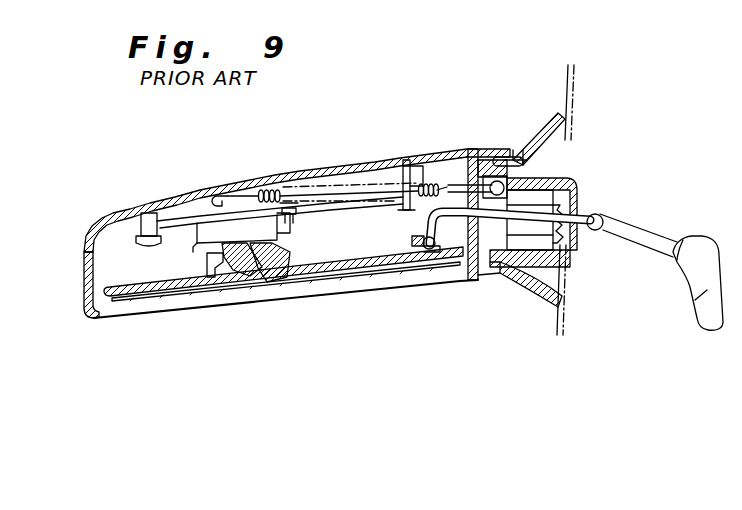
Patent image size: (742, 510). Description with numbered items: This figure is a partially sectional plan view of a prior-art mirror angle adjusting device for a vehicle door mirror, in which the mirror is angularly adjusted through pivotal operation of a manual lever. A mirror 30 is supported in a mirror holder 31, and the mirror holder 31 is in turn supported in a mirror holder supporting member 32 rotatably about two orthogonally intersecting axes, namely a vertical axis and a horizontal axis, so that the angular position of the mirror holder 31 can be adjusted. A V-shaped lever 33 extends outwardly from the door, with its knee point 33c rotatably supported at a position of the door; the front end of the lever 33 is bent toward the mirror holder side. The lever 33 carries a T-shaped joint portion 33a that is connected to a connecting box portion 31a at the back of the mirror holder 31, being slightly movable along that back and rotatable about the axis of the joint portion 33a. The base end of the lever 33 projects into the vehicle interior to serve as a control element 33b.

The mirror 30 is at (174, 303).
The mirror holder 31 is at (145, 300).
The connecting box portion 31a is at (405, 198).
The mirror holder supporting member 32 is at (288, 234).
The V-shaped lever 33 is at (661, 219).
The T-shaped joint portion 33a is at (430, 250).
The control element 33b is at (707, 290).
The knee point 33c is at (598, 215).